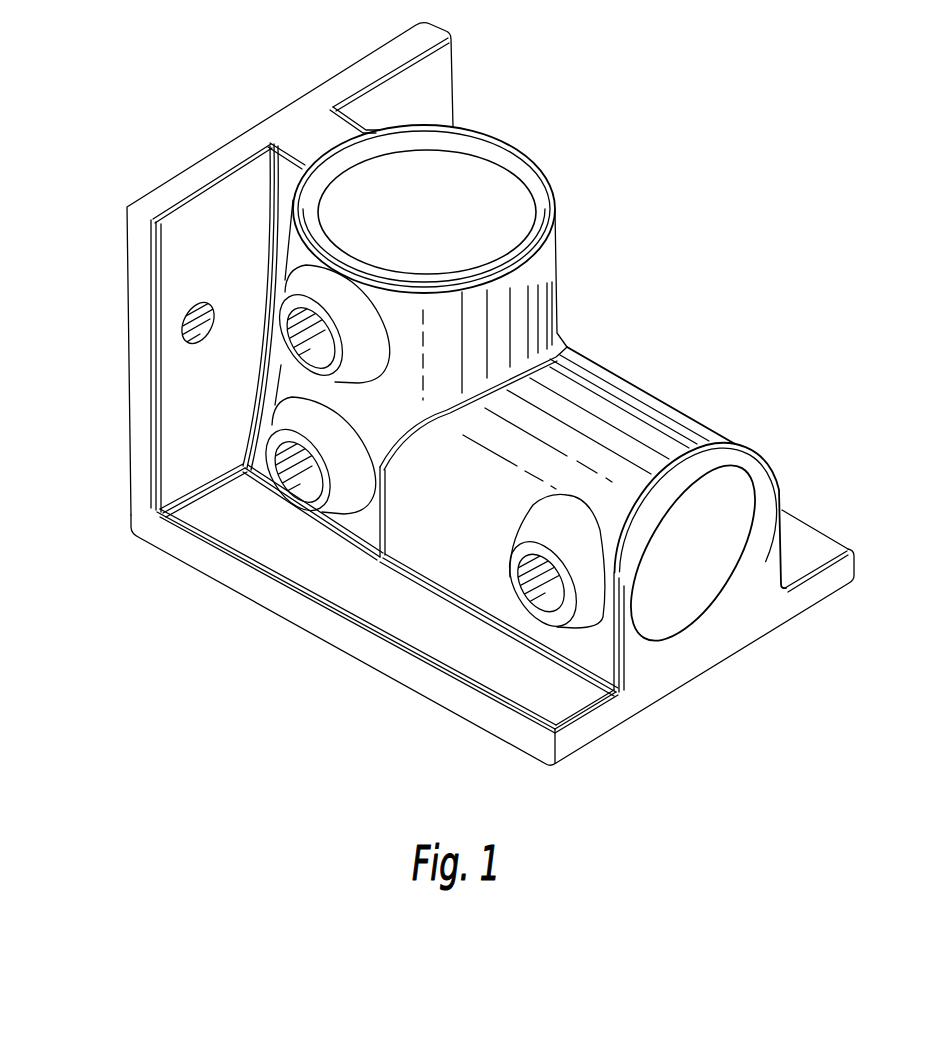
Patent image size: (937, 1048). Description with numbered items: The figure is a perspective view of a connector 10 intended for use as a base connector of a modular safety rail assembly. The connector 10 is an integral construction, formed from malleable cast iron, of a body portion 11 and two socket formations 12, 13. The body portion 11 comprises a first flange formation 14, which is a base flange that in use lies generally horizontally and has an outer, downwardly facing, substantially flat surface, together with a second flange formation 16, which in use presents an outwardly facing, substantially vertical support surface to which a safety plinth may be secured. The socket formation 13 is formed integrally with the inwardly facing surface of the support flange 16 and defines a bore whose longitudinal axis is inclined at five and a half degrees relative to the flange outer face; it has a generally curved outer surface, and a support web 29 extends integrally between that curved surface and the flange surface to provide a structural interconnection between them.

The connector 10 is at (174, 121).
The body portion 11 is at (108, 508).
The socket formation 12 is at (690, 582).
The socket formation 13 is at (467, 190).
The first flange formation 14 is at (368, 653).
The second flange formation 16 is at (138, 420).
The support web 29 is at (310, 133).